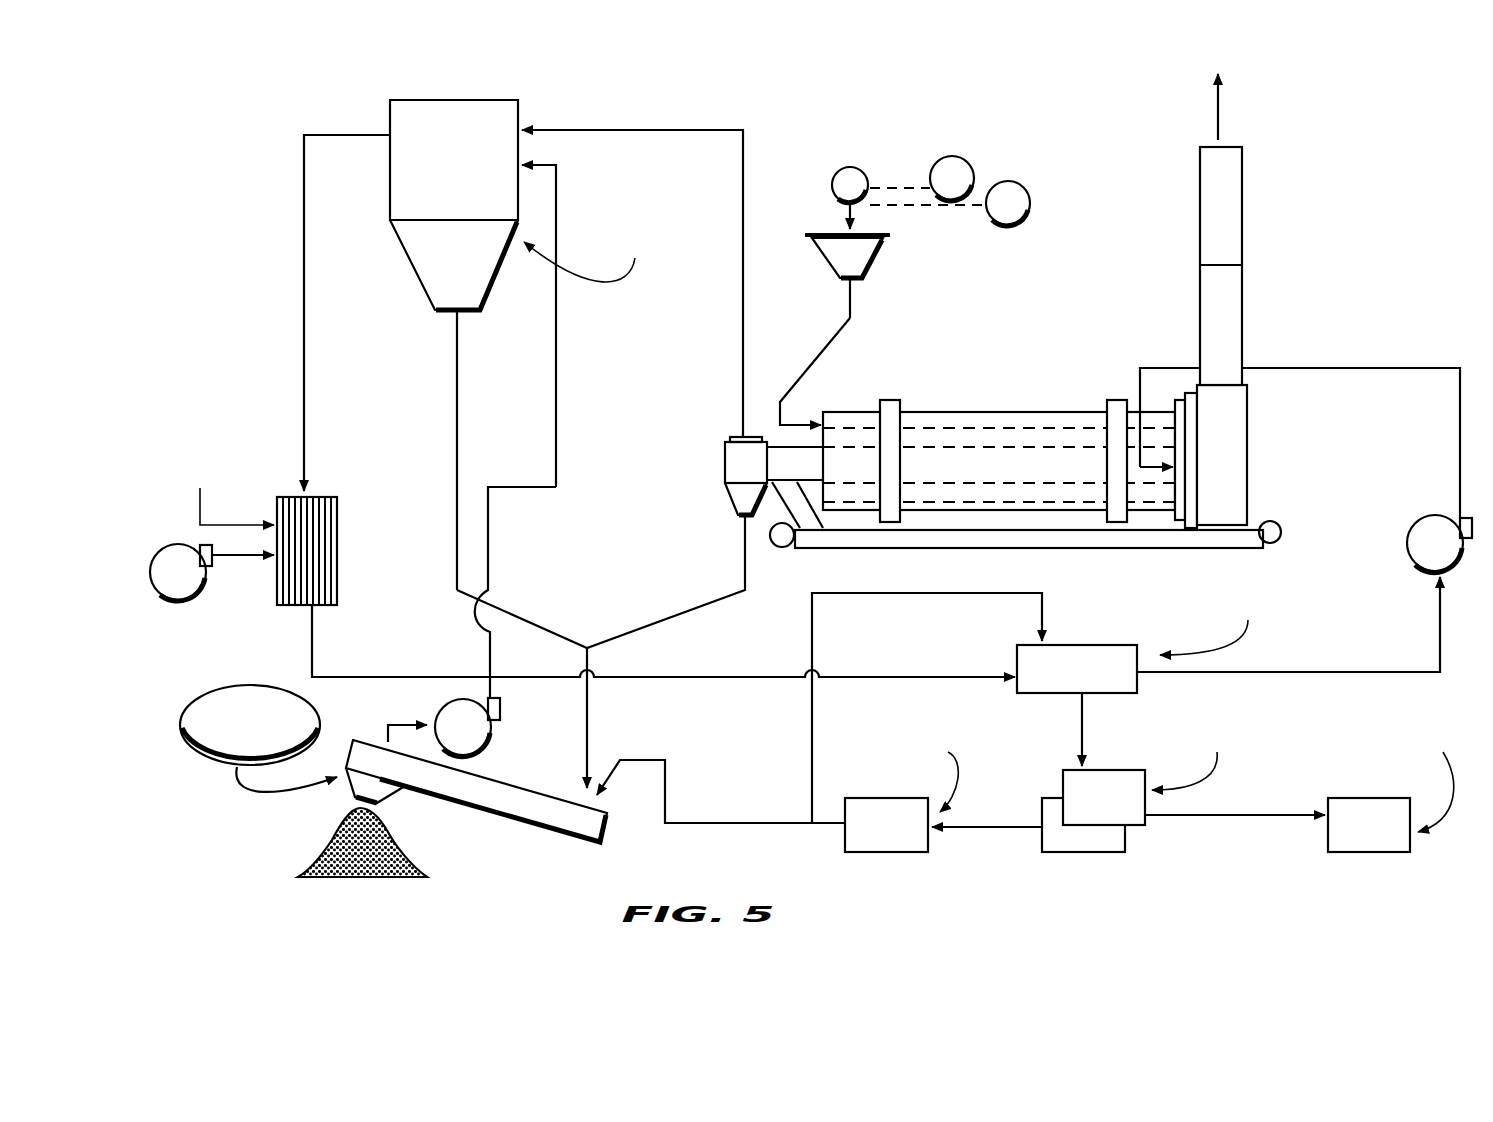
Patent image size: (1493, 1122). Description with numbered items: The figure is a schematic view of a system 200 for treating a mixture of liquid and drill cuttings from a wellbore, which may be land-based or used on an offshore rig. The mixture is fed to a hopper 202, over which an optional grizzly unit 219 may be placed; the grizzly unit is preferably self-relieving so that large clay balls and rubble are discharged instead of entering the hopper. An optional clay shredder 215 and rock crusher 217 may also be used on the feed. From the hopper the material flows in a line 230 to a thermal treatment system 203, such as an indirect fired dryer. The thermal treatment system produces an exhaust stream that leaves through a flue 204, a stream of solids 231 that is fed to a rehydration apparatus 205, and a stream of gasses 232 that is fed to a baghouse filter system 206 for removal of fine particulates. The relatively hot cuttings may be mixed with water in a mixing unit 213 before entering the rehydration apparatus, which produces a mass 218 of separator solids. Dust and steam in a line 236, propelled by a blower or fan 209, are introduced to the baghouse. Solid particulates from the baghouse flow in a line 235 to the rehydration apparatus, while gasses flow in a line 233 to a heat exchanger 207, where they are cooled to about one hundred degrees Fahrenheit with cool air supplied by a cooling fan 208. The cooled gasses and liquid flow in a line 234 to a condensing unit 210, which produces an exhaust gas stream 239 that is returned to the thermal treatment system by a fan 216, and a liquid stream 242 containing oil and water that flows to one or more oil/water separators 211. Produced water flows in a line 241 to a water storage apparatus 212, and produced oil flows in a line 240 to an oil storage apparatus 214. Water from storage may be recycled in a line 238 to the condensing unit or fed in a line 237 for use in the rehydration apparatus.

The system 200 is at (804, 489).
The hopper 202 is at (875, 258).
The thermal treatment system 203 is at (1025, 446).
The flue 204 is at (1243, 230).
The rehydration apparatus 205 is at (480, 813).
The baghouse filter system 206 is at (412, 268).
The heat exchanger 207 is at (337, 522).
The cooling fan 208 is at (210, 583).
The blower or fan 209 is at (493, 745).
The condensing unit 210 is at (1077, 643).
The oil/water separator 211 is at (1065, 852).
The water storage apparatus 212 is at (880, 852).
The mixing unit 213 is at (190, 747).
The oil storage apparatus 214 is at (1373, 798).
The clay shredder 215 is at (972, 165).
The fan 216 is at (1407, 552).
The rock crusher 217 is at (1030, 208).
The mass of separator solids 218 is at (317, 853).
The grizzly unit 219 is at (832, 188).
The line 230 is at (850, 318).
The stream of solids 231 is at (657, 625).
The stream of gasses 232 is at (743, 378).
The line 233 is at (304, 362).
The line 234 is at (387, 677).
The line 235 is at (457, 413).
The line 236 is at (556, 403).
The line 237 is at (733, 822).
The line 238 is at (952, 593).
The exhaust gas stream 239 is at (1333, 672).
The line 240 is at (1255, 815).
The line 241 is at (990, 827).
The stream 242 is at (1080, 727).